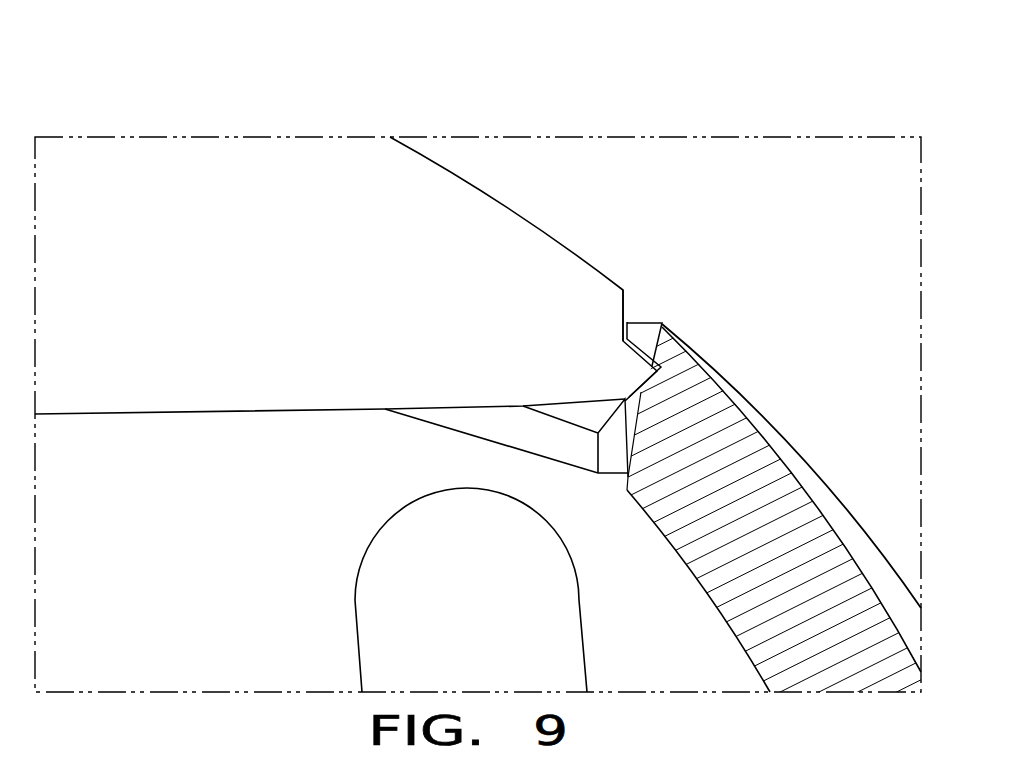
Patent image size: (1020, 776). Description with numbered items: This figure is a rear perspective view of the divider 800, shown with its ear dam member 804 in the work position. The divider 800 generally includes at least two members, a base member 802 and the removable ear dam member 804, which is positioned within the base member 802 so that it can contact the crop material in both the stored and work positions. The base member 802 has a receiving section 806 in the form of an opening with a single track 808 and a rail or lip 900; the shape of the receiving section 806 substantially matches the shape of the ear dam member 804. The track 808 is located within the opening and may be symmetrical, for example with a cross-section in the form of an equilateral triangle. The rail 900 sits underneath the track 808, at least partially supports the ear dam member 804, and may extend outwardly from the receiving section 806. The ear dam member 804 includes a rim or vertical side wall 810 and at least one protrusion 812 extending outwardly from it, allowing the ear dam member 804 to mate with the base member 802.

The divider 800 is at (703, 116).
The base member 802 is at (820, 493).
The ear dam member 804 is at (482, 188).
The receiving section 806 is at (623, 325).
The track 808 is at (635, 388).
The vertical side wall 810 is at (628, 303).
The protrusion 812 is at (668, 336).
The rail 900 is at (573, 442).